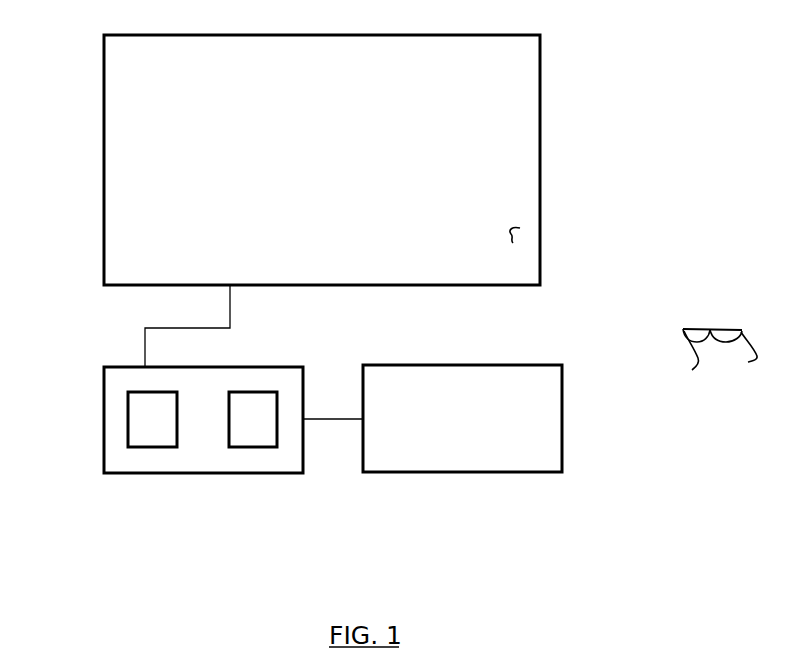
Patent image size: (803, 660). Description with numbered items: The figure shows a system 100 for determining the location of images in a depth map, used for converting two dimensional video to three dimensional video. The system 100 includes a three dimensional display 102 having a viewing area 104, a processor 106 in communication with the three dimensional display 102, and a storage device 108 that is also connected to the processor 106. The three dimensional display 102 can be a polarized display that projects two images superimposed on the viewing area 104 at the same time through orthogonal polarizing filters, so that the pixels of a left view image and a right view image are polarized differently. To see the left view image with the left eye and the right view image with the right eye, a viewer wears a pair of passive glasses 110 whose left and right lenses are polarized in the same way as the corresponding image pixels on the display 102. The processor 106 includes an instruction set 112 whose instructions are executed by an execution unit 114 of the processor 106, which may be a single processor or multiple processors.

The system 100 is at (636, 57).
The three dimensional display 102 is at (541, 153).
The viewing area 104 is at (513, 234).
The processor 106 is at (103, 443).
The storage device 108 is at (564, 401).
The passive glasses 110 is at (710, 330).
The instruction set 112 is at (141, 447).
The execution unit 114 is at (247, 447).